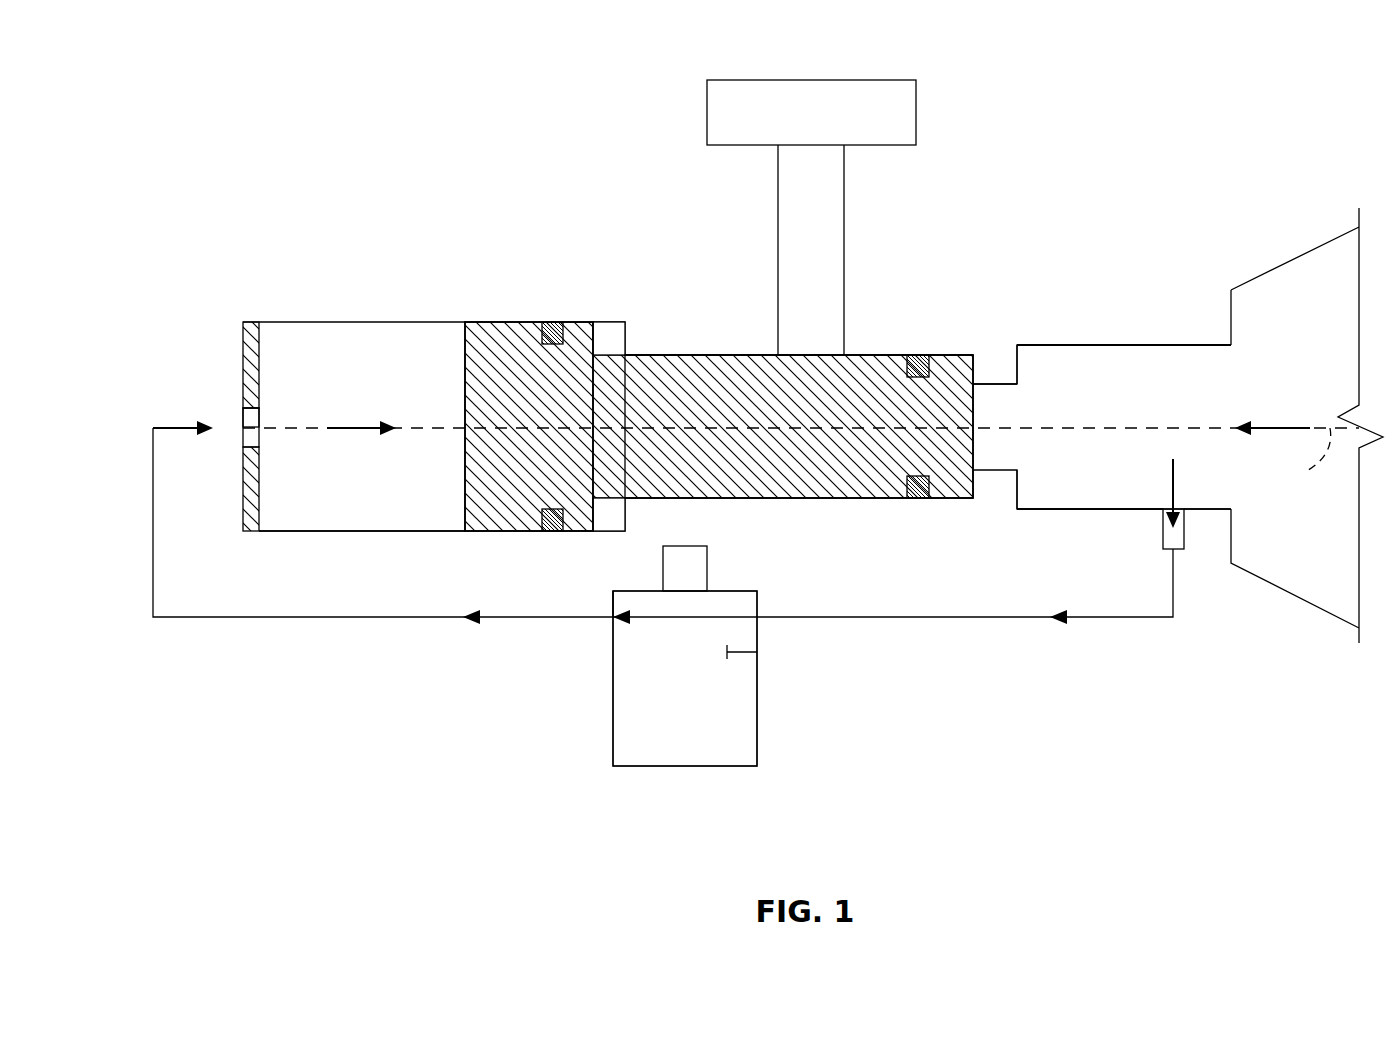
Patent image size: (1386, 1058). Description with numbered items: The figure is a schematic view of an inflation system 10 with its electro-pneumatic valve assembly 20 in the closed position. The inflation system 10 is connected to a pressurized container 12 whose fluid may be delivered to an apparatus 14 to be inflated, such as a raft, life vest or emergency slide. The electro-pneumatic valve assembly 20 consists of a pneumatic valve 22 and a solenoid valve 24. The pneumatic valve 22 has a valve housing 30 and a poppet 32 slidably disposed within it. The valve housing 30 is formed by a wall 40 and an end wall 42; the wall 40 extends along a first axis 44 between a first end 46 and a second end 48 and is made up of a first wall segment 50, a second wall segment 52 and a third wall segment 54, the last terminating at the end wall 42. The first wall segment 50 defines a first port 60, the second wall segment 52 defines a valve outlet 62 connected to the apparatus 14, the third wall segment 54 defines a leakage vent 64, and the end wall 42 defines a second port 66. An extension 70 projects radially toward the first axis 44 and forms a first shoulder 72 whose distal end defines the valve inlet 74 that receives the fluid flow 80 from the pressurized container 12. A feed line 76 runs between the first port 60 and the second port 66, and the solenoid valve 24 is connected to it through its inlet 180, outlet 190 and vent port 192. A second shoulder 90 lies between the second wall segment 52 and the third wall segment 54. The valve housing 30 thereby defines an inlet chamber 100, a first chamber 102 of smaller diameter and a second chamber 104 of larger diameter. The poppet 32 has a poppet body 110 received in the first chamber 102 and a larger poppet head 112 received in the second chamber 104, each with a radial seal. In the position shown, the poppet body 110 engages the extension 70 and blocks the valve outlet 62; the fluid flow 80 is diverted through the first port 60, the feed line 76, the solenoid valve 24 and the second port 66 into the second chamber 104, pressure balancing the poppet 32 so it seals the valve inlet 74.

The inflation system 10 is at (1192, 104).
The pressurized container 12 is at (1283, 592).
The apparatus 14 is at (916, 103).
The electro-pneumatic valve assembly 20 is at (1008, 310).
The pneumatic valve 22 is at (966, 522).
The solenoid valve 24 is at (788, 757).
The valve housing 30 is at (1046, 322).
The poppet 32 is at (450, 483).
The wall 40 is at (1150, 360).
The end wall 42 is at (243, 345).
The first axis 44 is at (1309, 466).
The first end 46 is at (1230, 345).
The second end 48 is at (248, 320).
The first wall segment 50 is at (1085, 345).
The second wall segment 52 is at (716, 355).
The third wall segment 54 is at (366, 320).
The first port 60 is at (1163, 530).
The valve outlet 62 is at (844, 243).
The leakage vent 64 is at (607, 322).
The second port 66 is at (243, 440).
The extension 70 is at (992, 362).
The first shoulder 72 is at (1017, 360).
The valve inlet 74 is at (1000, 472).
The feed line 76 is at (272, 618).
The fluid flow 80 is at (178, 427).
The second shoulder 90 is at (621, 338).
The inlet chamber 100 is at (1085, 509).
The first chamber 102 is at (865, 498).
The second chamber 104 is at (346, 530).
The poppet body 110 is at (772, 485).
The poppet head 112 is at (508, 510).
The inlet 180 is at (757, 611).
The outlet 190 is at (612, 617).
The vent port 192 is at (757, 652).